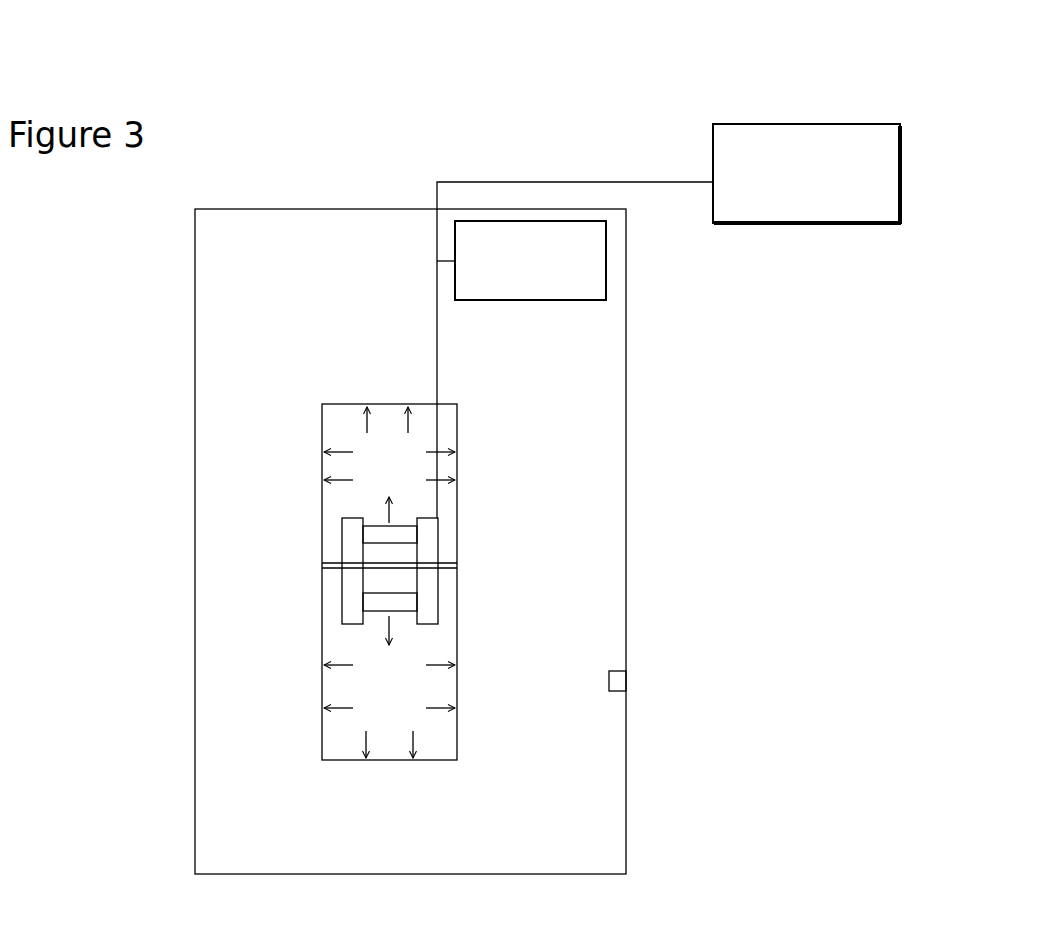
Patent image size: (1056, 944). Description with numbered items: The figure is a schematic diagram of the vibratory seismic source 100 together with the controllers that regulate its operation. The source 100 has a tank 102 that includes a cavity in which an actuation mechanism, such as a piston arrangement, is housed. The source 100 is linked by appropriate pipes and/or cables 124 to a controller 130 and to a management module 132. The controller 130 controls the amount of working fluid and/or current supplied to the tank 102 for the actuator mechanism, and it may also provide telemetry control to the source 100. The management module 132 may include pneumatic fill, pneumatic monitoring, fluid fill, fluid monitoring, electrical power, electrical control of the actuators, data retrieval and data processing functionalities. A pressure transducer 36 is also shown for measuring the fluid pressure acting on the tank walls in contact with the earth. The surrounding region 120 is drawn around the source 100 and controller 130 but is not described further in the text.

The source 100 is at (320, 490).
The tank 102 is at (458, 584).
The room 120 is at (553, 757).
The pipes and/or cables 124 is at (437, 326).
The controller 130 is at (542, 276).
The management module 132 is at (901, 173).
The pressure transducer 36 is at (616, 682).